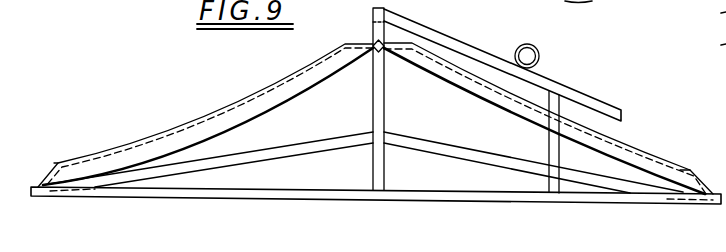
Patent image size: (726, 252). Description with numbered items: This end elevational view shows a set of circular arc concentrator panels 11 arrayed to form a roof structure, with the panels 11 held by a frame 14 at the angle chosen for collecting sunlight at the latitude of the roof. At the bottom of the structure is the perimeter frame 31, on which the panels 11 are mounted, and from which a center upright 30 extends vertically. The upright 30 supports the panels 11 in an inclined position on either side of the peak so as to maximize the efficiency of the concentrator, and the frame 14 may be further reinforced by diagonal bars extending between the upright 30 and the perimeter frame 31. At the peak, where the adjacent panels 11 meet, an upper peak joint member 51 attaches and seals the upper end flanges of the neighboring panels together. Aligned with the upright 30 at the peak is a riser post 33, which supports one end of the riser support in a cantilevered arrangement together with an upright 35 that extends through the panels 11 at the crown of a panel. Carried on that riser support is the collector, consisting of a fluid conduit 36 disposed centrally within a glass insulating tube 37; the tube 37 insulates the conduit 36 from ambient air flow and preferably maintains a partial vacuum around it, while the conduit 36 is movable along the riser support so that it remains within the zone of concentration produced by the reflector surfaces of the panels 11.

The circular arc concentrator panel 11 is at (148, 153).
The frame 14 is at (482, 152).
The center upright 30 is at (384, 99).
The perimeter frame 31 is at (174, 196).
The riser post 33 is at (373, 25).
The upright 35 is at (562, 126).
The fluid conduit 36 is at (541, 62).
The glass insulating tube 37 is at (529, 44).
The upper peak joint member 51 is at (373, 45).